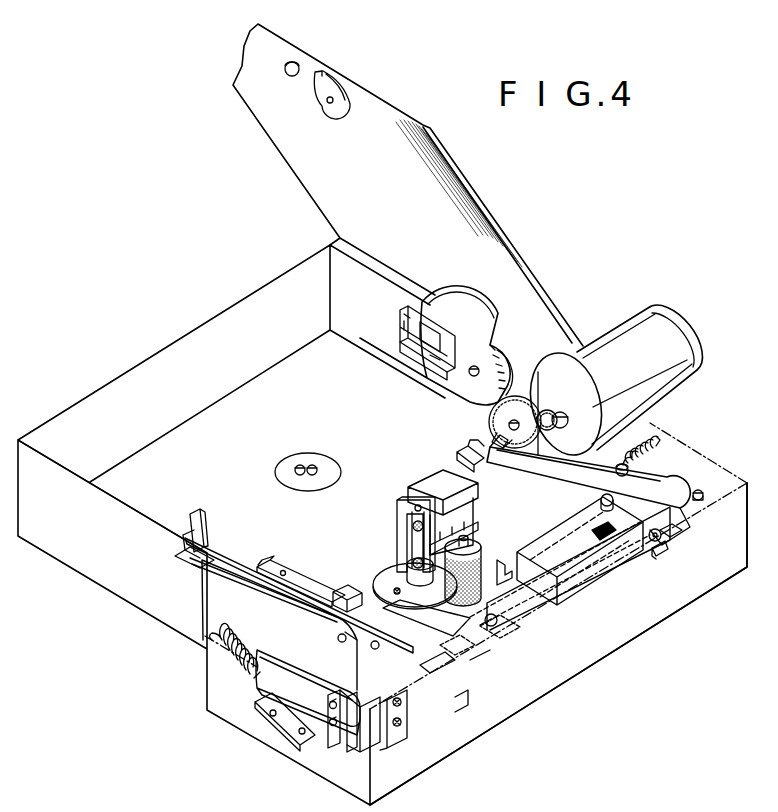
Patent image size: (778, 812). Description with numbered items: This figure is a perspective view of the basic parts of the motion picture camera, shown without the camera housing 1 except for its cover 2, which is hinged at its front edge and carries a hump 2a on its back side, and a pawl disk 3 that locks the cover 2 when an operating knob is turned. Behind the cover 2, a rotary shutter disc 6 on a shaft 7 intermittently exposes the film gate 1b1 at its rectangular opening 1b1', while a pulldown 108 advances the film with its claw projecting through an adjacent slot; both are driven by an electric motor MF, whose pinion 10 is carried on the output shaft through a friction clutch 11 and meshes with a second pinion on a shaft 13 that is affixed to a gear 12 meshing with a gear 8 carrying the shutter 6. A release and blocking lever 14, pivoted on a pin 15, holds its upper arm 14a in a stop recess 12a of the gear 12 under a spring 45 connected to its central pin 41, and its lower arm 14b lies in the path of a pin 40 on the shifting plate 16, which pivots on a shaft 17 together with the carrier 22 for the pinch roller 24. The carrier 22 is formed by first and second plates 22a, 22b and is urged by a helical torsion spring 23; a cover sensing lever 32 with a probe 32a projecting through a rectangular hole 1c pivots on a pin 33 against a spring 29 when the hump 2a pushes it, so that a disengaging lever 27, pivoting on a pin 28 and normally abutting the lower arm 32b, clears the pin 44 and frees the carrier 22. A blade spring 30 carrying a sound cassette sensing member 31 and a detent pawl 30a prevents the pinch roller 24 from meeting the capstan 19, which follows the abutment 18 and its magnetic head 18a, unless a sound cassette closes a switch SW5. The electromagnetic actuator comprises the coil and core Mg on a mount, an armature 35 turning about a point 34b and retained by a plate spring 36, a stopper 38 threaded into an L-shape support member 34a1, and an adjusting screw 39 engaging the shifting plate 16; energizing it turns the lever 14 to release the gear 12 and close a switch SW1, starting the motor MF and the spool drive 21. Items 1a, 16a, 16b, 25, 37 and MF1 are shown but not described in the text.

The camera housing 1 is at (210, 379).
The housing side wall 1a is at (200, 440).
The rectangular hole 1c is at (183, 540).
The cover 2 is at (388, 195).
The hump 2a is at (296, 62).
The pawl disk 3 is at (341, 98).
The rotary shutter disc 6 is at (470, 310).
The shaft 7 is at (474, 366).
The gear 8 is at (495, 352).
The pinion 10 is at (551, 410).
The friction clutch or spring 11 is at (563, 425).
The gear 12 is at (511, 388).
The stop recess 12a is at (494, 436).
The shaft 13 is at (515, 422).
The release and blocking lever 14 is at (692, 480).
The upper arm 14a is at (490, 455).
The lower arm 14b is at (658, 556).
The pin 15 is at (700, 492).
The shifting plate 16 is at (538, 613).
The slide plate tab 16a is at (673, 534).
The slide plate tab 16b is at (463, 712).
The shaft 17 is at (600, 501).
The abutment 18 is at (428, 488).
The magnetic head 18a is at (470, 500).
The capstan 19 is at (412, 540).
The spool drive 21 is at (335, 470).
The carrier 22 is at (580, 533).
The first framework or plate 22a is at (649, 530).
The second framework or plate 22b is at (458, 652).
The helical torsion spring 23 is at (509, 568).
The pinch roller 24 is at (495, 630).
The roller 25 is at (470, 543).
The disengaging lever 27 is at (482, 660).
The pivot pin 28 is at (437, 670).
The spring 29 is at (242, 640).
The blade spring member 30 is at (375, 608).
The detent pawl 30a is at (405, 576).
The sound cassette sensing member 31 is at (345, 590).
The cover sensing lever 32 is at (240, 572).
The probe 32a is at (203, 530).
The lower arm 32b is at (349, 658).
The pivot pin 33 is at (338, 640).
The L-shape support member 34a1 is at (398, 740).
The point 34b is at (352, 748).
The armature 35 is at (372, 748).
The plate spring 36 is at (336, 745).
The screw 37 is at (332, 692).
The stopper 38 is at (401, 724).
The adjusting screw 39 is at (401, 705).
The pin 40 is at (661, 540).
The central pin 41 is at (629, 471).
The pin 44 is at (494, 626).
The spring 45 is at (641, 447).
The pulldown 108 is at (410, 321).
The film gate 1b1 is at (404, 368).
The rectangular opening 1b1' is at (416, 374).
The electric motor MF is at (660, 325).
The motor bracket MF1 is at (553, 405).
The coil and core Mg is at (292, 657).
The switch SW1 is at (460, 458).
The switch SW5 is at (308, 584).